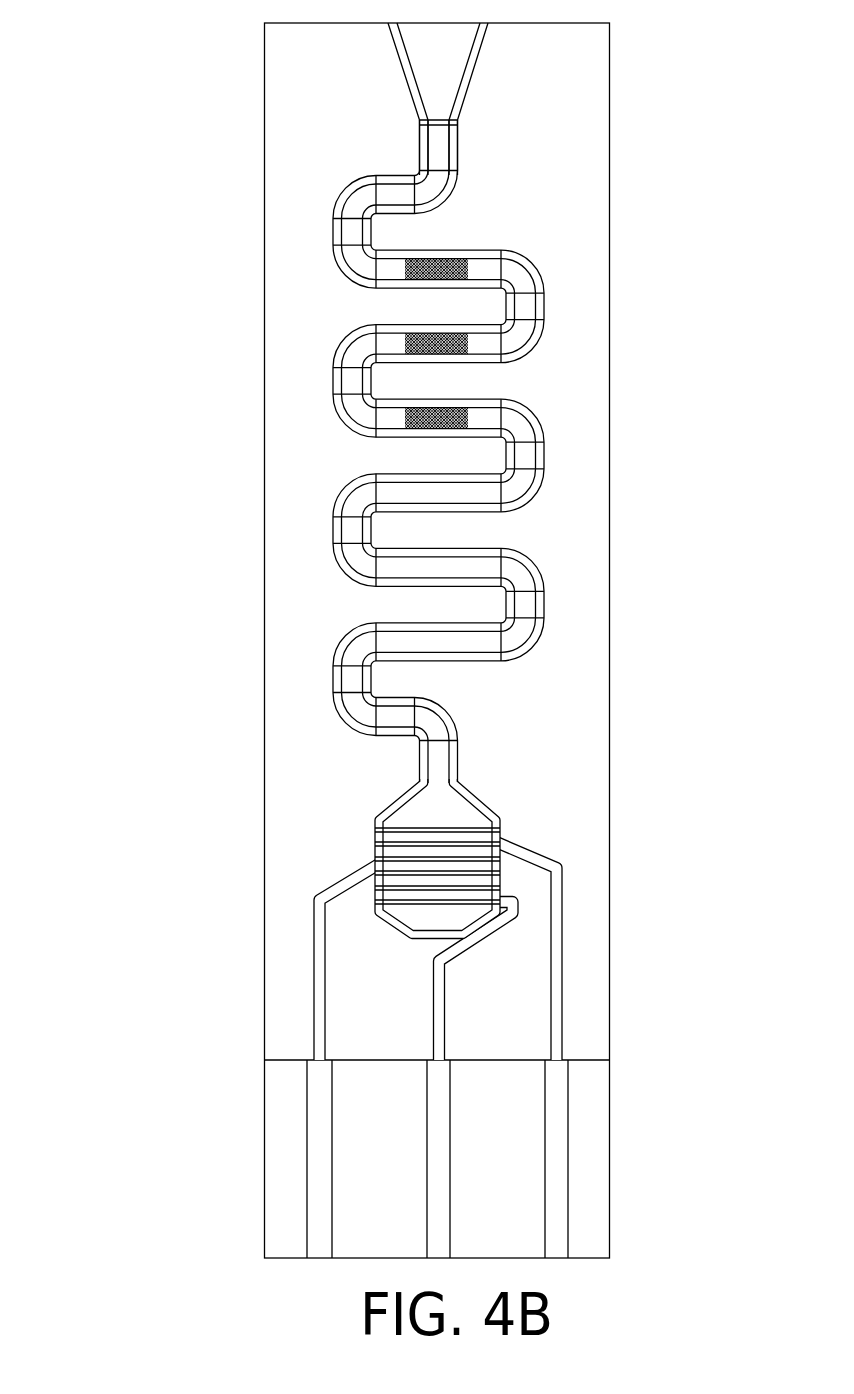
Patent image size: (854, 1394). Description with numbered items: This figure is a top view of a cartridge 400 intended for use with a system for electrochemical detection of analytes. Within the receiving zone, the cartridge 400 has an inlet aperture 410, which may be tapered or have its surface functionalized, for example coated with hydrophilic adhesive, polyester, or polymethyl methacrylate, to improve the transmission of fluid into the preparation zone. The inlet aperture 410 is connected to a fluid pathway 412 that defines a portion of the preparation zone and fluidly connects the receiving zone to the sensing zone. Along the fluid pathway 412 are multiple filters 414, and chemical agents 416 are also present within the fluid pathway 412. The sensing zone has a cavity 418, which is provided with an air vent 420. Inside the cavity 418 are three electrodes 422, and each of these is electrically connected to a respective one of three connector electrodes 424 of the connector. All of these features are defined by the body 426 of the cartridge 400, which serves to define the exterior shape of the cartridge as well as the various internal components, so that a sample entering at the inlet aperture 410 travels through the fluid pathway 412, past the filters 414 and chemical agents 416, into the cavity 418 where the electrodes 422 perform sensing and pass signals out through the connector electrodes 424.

The cartridge 400 is at (383, 640).
The inlet aperture 410 is at (440, 68).
The fluid pathway 412 is at (352, 232).
The filters 414 is at (455, 174).
The chemical agents 416 is at (453, 418).
The cavity 418 is at (403, 820).
The air vent 420 is at (438, 951).
The electrodes 422 is at (438, 865).
The connector electrodes 424 is at (322, 1163).
The body 426 is at (555, 697).